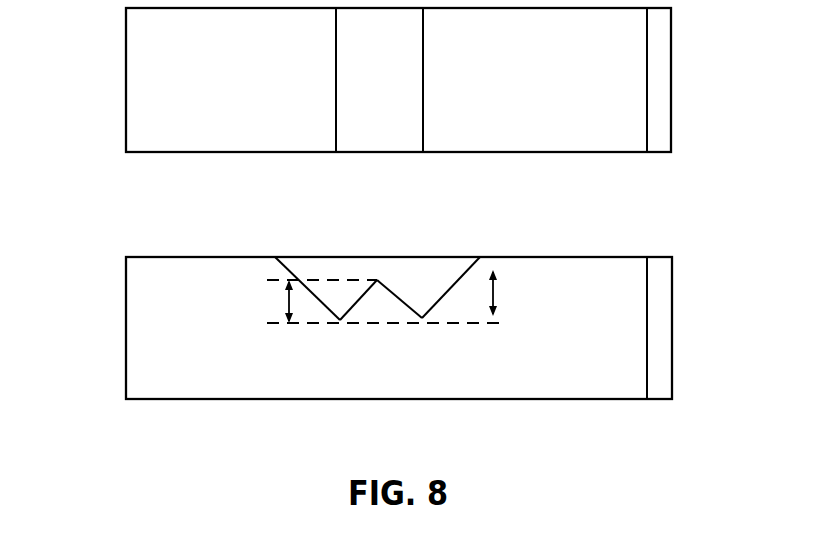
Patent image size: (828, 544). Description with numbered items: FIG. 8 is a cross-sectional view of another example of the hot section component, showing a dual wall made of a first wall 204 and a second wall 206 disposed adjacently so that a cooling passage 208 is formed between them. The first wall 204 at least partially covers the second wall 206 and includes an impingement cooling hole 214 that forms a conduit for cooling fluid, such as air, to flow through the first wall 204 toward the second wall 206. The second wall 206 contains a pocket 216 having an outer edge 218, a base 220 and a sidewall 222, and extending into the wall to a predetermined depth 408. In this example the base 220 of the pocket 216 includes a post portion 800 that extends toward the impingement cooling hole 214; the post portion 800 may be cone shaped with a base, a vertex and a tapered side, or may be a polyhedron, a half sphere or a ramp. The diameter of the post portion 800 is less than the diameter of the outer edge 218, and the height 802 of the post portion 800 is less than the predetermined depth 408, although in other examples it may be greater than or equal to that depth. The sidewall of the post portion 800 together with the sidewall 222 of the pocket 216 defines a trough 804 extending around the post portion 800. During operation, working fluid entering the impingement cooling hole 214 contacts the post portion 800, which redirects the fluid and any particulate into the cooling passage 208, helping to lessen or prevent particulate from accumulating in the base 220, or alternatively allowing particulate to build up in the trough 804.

The first wall 204 is at (130, 125).
The second wall 206 is at (130, 293).
The cooling passage 208 is at (618, 186).
The impingement cooling hole 214 is at (340, 87).
The pocket 216 is at (341, 268).
The outer edge of the pocket 218 is at (478, 257).
The base of the pocket 220 is at (325, 332).
The sidewall of the pocket 222 is at (285, 255).
The predetermined depth of the pocket 408 is at (495, 293).
The post portion 800 is at (394, 306).
The height of the post portion 802 is at (284, 304).
The trough 804 is at (420, 318).